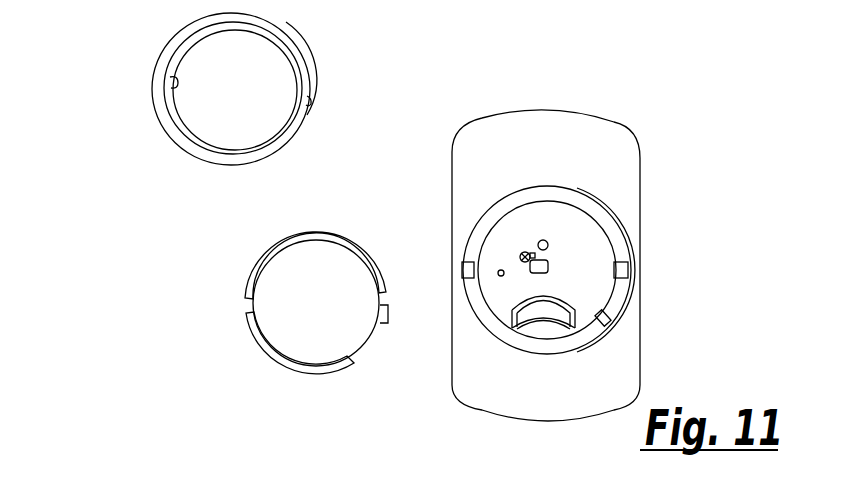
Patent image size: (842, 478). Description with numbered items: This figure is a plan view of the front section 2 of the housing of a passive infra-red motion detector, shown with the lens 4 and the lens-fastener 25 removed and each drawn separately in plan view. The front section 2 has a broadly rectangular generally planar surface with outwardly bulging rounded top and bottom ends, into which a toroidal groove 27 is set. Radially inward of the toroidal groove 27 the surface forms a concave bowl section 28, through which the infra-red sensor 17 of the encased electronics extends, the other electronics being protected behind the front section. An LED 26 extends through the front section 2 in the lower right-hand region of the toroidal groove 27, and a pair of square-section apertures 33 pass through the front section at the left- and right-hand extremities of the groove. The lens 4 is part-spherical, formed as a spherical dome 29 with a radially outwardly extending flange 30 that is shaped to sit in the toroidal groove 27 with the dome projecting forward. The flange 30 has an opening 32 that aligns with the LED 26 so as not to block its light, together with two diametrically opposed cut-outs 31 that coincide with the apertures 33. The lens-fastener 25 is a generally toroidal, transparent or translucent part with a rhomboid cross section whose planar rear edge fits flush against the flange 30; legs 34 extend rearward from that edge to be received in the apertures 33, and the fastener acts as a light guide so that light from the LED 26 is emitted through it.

The front section 2 is at (615, 163).
The lens 4 is at (302, 338).
The infra-red sensor 17 is at (549, 266).
The lens-fastener 25 is at (155, 80).
The LED 26 is at (607, 333).
The toroidal groove 27 is at (605, 227).
The bowl section 28 is at (582, 293).
The spherical dome 29 is at (288, 265).
The flange 30 is at (252, 277).
The cut-outs 31 is at (252, 300).
The opening 32 is at (357, 352).
The apertures 33 is at (462, 274).
The legs 34 is at (173, 82).